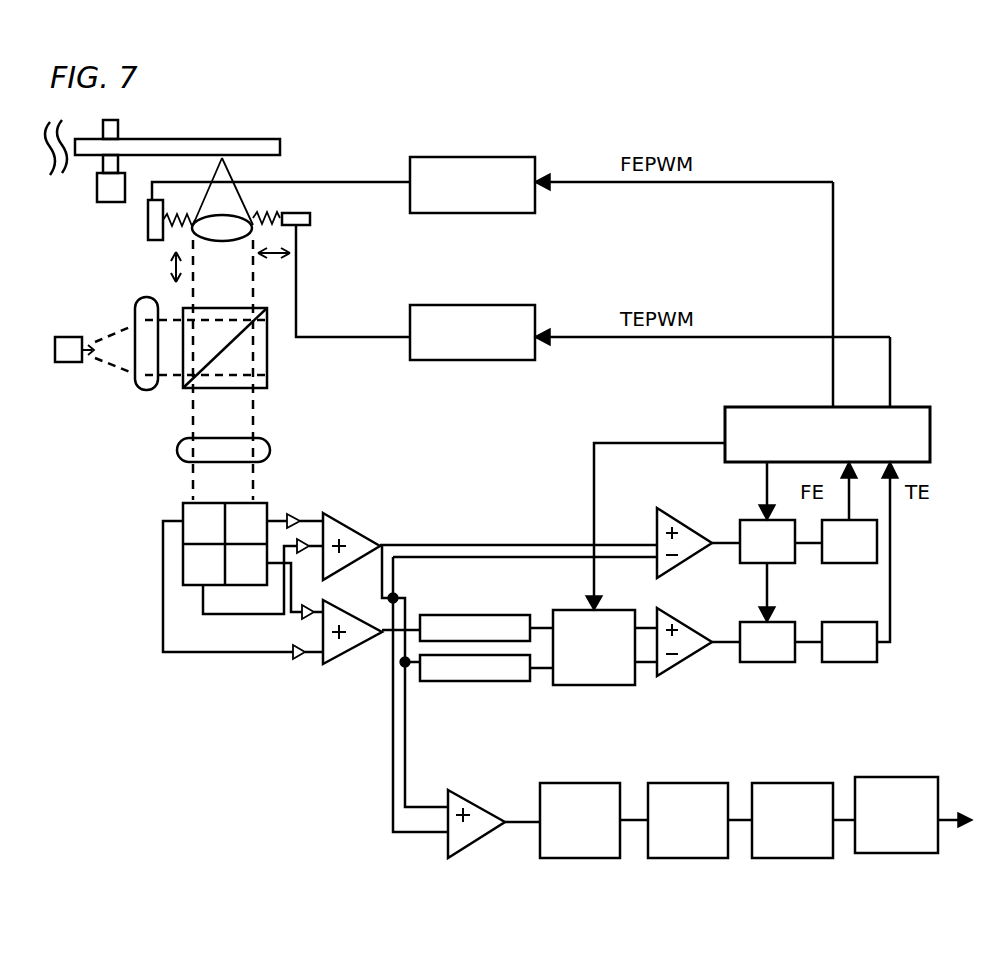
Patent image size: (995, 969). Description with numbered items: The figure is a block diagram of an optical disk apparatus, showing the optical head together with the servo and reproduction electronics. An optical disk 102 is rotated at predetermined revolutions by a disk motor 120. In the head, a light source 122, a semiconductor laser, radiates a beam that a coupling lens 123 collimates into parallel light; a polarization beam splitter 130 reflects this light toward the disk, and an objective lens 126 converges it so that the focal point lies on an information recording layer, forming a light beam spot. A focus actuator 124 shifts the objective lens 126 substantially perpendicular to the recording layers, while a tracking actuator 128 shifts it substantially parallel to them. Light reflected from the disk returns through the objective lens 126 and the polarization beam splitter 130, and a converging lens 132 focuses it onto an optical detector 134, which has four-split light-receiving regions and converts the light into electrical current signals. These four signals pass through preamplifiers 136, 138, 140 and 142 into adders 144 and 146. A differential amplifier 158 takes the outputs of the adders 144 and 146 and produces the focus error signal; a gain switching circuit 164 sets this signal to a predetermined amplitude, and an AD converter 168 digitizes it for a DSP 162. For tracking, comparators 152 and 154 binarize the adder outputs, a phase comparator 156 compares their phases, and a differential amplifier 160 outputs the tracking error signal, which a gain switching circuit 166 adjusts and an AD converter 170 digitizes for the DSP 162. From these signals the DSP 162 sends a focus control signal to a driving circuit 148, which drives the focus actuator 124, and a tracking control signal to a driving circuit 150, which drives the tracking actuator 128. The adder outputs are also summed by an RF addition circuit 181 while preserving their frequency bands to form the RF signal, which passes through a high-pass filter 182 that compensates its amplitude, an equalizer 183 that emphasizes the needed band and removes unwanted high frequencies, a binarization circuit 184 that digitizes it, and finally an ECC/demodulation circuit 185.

The optical disk 102 is at (177, 144).
The disk motor 120 is at (102, 203).
The light source 122 is at (66, 363).
The coupling lens 123 is at (136, 391).
The focus actuator 124 is at (142, 237).
The objective lens 126 is at (227, 210).
The tracking actuator 128 is at (310, 220).
The polarization beam splitter 130 is at (268, 378).
The converging lens 132 is at (271, 445).
The optical detector 134 is at (265, 500).
The preamplifier 136 is at (300, 518).
The preamplifier 138 is at (284, 560).
The preamplifier 140 is at (282, 622).
The preamplifier 142 is at (295, 660).
The adder 144 is at (368, 535).
The adder 146 is at (332, 657).
The driving circuit 148 is at (460, 157).
The driving circuit 150 is at (460, 303).
The comparator 152 is at (444, 611).
The comparator 154 is at (442, 681).
The phase comparator 156 is at (572, 685).
The differential amplifier 158 is at (662, 513).
The differential amplifier 160 is at (668, 673).
The digital signal processor 162 is at (741, 407).
The gain switching circuit 164 is at (748, 567).
The gain switching circuit 166 is at (758, 665).
The AD converter 168 is at (835, 568).
The AD converter 170 is at (841, 665).
The RF addition circuit 181 is at (472, 846).
The high-pass filter 182 is at (578, 858).
The equalizer 183 is at (687, 858).
The binarization circuit 184 is at (788, 858).
The ECC/demodulation circuit 185 is at (898, 858).